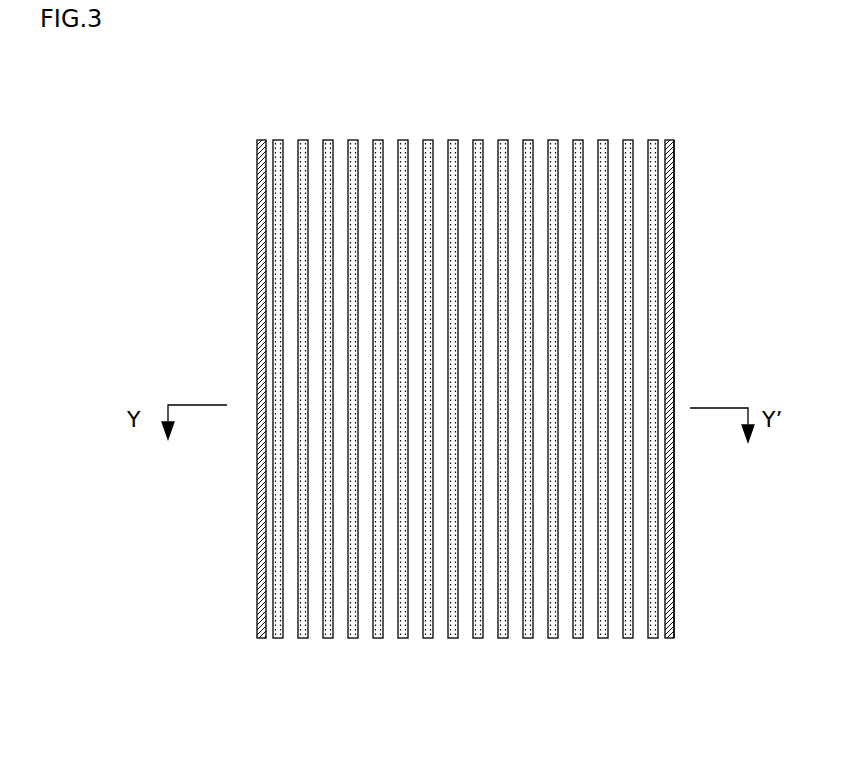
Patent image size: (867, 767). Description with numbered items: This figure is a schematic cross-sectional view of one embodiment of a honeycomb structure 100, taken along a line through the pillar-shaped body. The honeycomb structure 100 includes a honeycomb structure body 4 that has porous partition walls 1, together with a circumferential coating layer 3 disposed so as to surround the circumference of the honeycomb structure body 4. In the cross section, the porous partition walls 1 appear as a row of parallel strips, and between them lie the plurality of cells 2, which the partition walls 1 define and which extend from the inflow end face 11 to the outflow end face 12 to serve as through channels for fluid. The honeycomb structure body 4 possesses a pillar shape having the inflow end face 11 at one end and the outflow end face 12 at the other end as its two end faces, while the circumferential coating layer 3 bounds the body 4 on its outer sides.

The honeycomb structure 100 is at (735, 28).
The porous partition wall 1 is at (526, 145).
The cell 2 is at (414, 158).
The circumferential coating layer 3 is at (673, 224).
The honeycomb structure body 4 is at (681, 326).
The inflow end face 11 is at (281, 127).
The outflow end face 12 is at (277, 645).